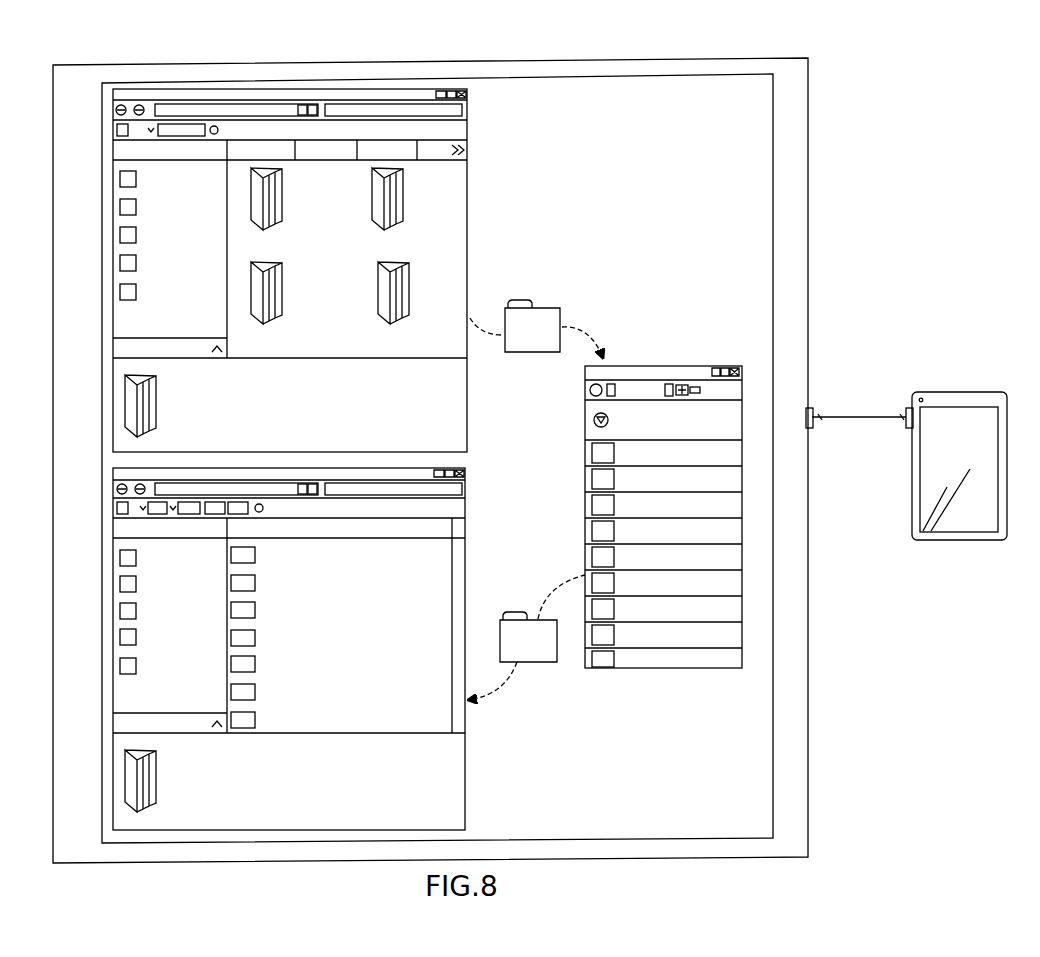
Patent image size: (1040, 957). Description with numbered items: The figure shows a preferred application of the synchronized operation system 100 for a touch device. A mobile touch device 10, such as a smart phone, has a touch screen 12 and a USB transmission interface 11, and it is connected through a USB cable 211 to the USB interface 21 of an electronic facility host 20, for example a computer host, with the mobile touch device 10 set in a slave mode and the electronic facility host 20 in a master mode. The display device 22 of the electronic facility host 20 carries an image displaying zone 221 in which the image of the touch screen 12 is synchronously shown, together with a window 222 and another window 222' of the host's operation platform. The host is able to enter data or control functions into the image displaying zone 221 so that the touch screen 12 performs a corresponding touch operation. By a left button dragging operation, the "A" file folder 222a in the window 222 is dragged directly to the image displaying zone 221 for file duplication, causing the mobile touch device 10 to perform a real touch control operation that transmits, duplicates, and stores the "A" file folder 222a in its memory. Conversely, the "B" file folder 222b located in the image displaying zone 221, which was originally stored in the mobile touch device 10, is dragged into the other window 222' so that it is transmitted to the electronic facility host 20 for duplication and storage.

The synchronized operation system 100 is at (905, 135).
The electronic facility host 20 is at (809, 223).
The display device 22 is at (773, 682).
The window 222 is at (318, 270).
The another window 222' is at (320, 649).
The "A" file folder 222a is at (548, 302).
The "B" file folder 222b is at (538, 662).
The image displaying zone 221 is at (680, 365).
The USB cable 211 is at (862, 415).
The USB interface 21 is at (810, 428).
The USB transmission interface 11 is at (907, 422).
The mobile touch device 10 is at (962, 400).
The touch screen 12 is at (966, 526).